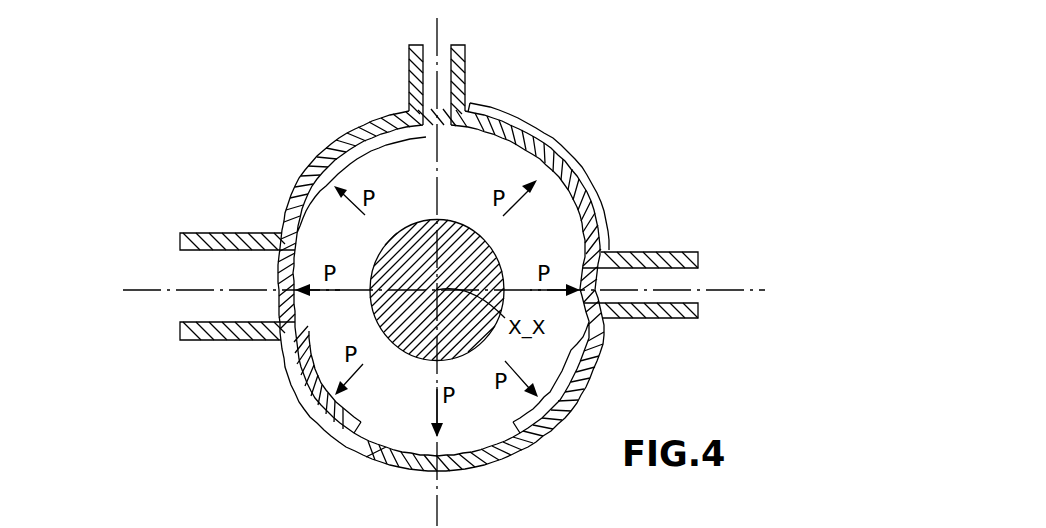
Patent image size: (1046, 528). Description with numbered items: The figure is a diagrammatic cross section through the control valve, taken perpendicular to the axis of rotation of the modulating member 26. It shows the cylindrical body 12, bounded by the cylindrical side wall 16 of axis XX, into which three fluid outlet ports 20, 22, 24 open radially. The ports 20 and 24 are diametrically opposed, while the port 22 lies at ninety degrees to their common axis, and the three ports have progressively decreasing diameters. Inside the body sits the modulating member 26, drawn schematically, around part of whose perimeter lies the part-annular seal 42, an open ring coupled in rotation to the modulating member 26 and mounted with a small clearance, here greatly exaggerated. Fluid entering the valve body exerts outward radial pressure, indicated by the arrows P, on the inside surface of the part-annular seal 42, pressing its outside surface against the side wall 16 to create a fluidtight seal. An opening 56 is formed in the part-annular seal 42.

The cylindrical body 12 is at (322, 142).
The cylindrical side wall 16 is at (572, 168).
The fluid outlet port 20 is at (212, 232).
The fluid outlet port 22 is at (466, 72).
The fluid outlet port 24 is at (674, 252).
The modulating member 26 is at (404, 358).
The part-annular seal 42 is at (291, 378).
The opening 56 is at (472, 118).